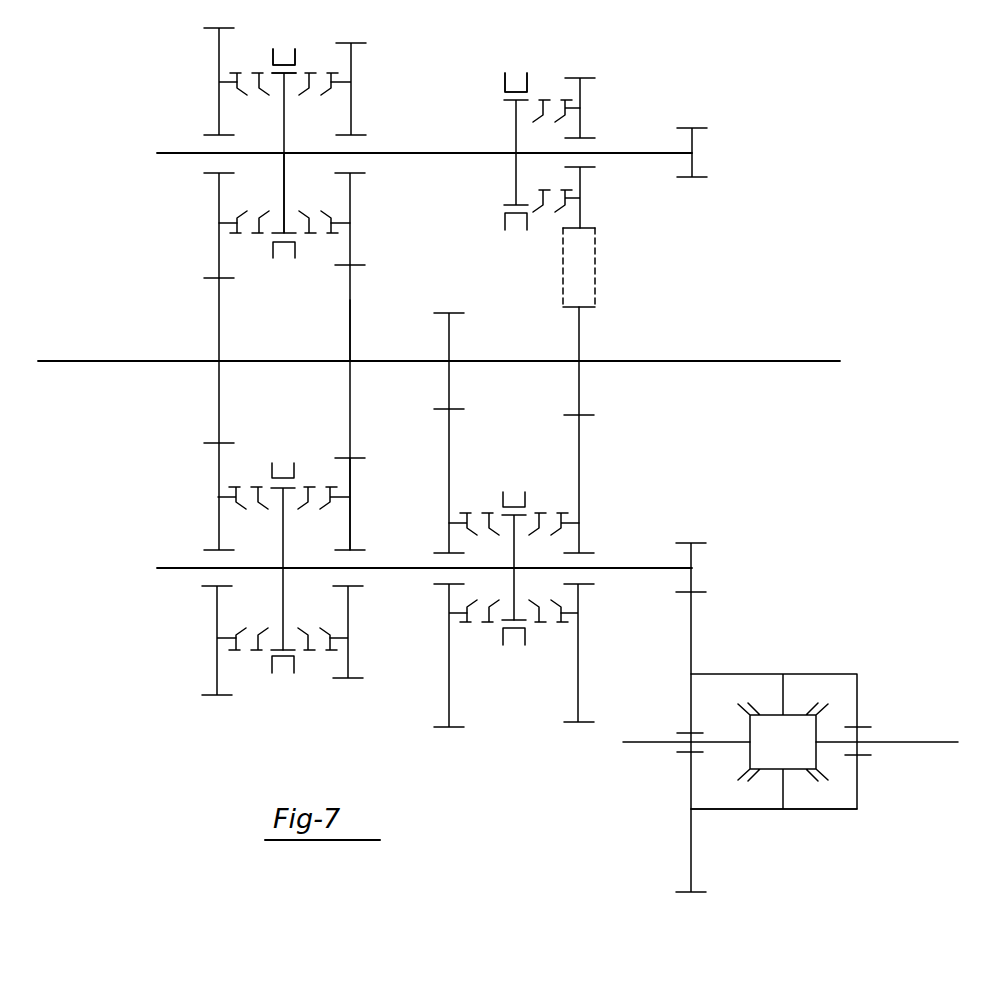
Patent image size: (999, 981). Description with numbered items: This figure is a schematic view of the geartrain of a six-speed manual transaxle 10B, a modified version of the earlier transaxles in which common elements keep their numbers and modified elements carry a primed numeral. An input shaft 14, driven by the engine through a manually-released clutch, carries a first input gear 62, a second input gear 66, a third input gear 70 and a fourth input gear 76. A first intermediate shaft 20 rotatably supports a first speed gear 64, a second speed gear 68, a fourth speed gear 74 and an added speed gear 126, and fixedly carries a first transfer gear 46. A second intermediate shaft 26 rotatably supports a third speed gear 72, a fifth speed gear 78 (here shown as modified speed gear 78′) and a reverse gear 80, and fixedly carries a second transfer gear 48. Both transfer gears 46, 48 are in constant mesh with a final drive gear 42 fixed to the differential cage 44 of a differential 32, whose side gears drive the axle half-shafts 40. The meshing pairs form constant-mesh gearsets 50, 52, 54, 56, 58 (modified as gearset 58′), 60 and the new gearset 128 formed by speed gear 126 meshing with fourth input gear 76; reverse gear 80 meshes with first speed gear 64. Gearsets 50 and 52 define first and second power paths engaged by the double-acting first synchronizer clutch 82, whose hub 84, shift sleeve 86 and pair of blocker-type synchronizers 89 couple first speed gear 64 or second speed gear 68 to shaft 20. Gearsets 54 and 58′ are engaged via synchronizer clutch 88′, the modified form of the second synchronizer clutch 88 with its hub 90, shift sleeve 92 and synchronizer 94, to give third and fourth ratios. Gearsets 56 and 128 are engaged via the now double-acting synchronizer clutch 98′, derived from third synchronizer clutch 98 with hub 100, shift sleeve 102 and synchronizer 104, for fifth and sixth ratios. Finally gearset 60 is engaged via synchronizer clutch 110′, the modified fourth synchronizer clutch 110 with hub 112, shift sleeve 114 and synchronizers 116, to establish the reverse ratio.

The six-speed transaxle 10B is at (808, 162).
The input shaft 14 is at (738, 355).
The first intermediate shaft 20 is at (630, 555).
The second intermediate shaft 26 is at (650, 150).
The differential 32 is at (865, 645).
The axle half-shafts 40 is at (650, 715).
The final drive gear 42 is at (692, 620).
The differential cage 44 is at (813, 809).
The first transfer gear 46 is at (695, 545).
The second transfer gear 48 is at (700, 128).
The gearset 50 is at (605, 408).
The gearset 52 is at (428, 440).
The gearset 54 is at (185, 265).
The gearset 56 is at (185, 443).
The gearset 58 is at (386, 267).
The gearset 58′ is at (375, 268).
The gearset 60 is at (612, 218).
The first input gear 62 is at (582, 330).
The first speed gear 64 is at (580, 265).
The second input gear 66 is at (452, 330).
The second speed gear 68 is at (449, 727).
The third input gear 70 is at (219, 305).
The third speed gear 72 is at (219, 68).
The fourth speed gear 74 is at (205, 697).
The fourth input gear 76 is at (350, 325).
The fifth speed gear 78 is at (376, 89).
The speed gear 78′ is at (351, 65).
The reverse gear 80 is at (586, 80).
The first synchronizer clutch 82 is at (523, 675).
The hub 84 is at (514, 545).
The shift sleeve 86 is at (514, 650).
The second synchronizer clutch 88 is at (335, 44).
The synchronizer clutch 88′ is at (303, 47).
The blocker-type synchronizers 89 is at (484, 500).
The hub 90 is at (284, 205).
The shift sleeve 92 is at (289, 52).
The blocker-type synchronizer 94 is at (313, 108).
The third synchronizer clutch 98 is at (283, 692).
The synchronizer clutch 98′ is at (288, 680).
The hub 100 is at (312, 540).
The shift sleeve 102 is at (272, 668).
The blocker-type synchronizer 104 is at (252, 478).
The fourth synchronizer clutch 110 is at (472, 63).
The synchronizer clutch 110′ is at (504, 75).
The hub 112 is at (516, 126).
The shift sleeve 114 is at (528, 80).
The blocker-type synchronizers 116 is at (556, 83).
The speed gear 126 is at (348, 678).
The gearset 128 is at (378, 448).